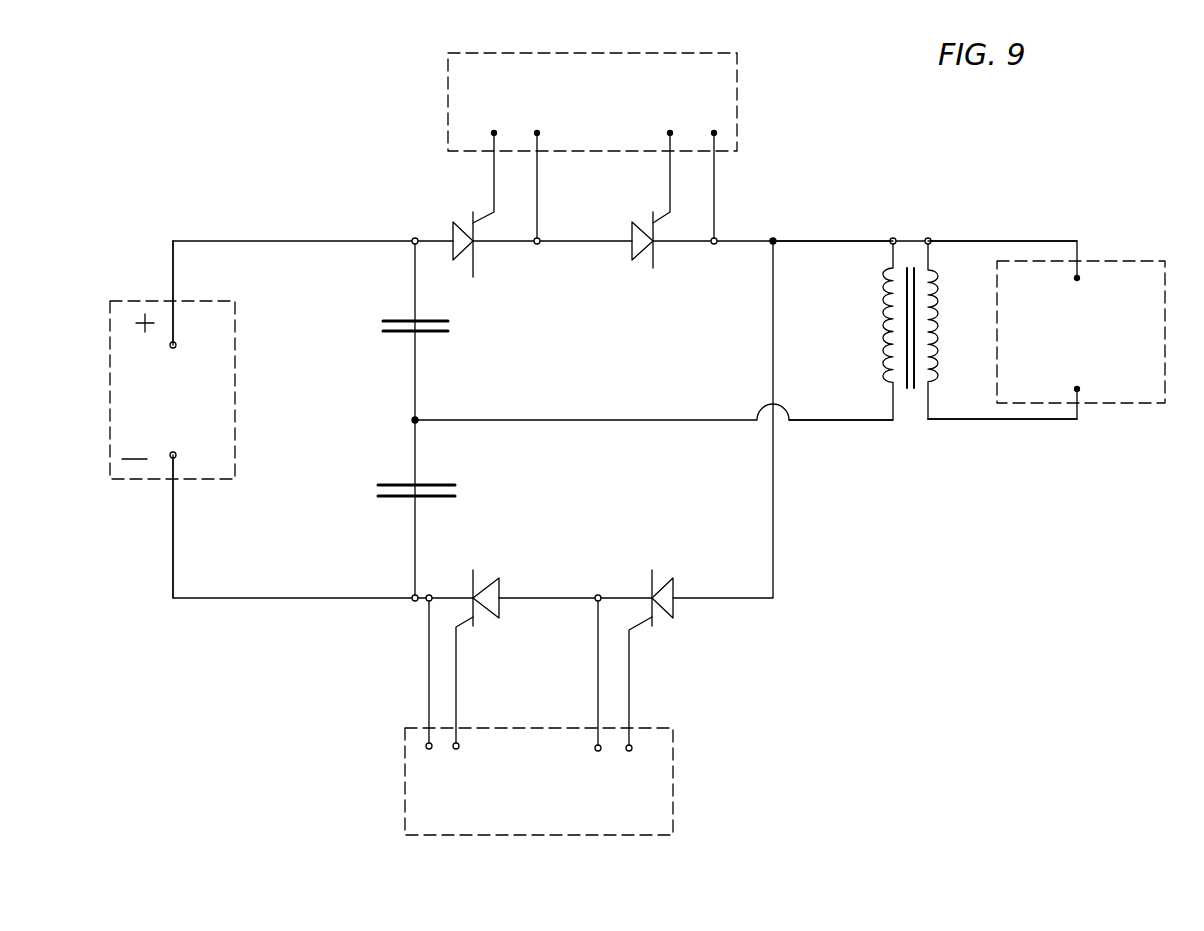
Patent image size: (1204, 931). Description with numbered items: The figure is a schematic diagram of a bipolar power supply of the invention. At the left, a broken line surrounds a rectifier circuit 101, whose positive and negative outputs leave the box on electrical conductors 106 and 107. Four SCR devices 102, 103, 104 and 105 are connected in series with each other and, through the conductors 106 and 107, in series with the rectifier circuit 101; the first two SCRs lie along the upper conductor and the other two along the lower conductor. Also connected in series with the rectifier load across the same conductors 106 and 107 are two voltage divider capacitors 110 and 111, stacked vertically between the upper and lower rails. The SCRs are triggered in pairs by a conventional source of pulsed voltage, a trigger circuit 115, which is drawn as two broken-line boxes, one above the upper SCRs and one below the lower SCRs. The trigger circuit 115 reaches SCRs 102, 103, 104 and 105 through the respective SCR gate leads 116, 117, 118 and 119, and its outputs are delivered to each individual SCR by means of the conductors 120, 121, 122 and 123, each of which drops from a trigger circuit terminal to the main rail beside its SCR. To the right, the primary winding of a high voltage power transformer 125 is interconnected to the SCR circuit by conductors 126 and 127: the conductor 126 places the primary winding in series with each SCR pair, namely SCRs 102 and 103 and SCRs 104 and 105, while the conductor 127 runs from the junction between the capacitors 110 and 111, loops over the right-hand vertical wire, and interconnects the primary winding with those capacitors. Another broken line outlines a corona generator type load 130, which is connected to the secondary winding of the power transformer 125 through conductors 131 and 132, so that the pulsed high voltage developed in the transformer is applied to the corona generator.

The rectifier circuit 101 is at (125, 410).
The SCR device 102 is at (452, 233).
The SCR device 103 is at (640, 247).
The SCR device 104 is at (673, 600).
The SCR device 105 is at (490, 580).
The electrical conductor 106 is at (173, 263).
The electrical conductor 107 is at (173, 535).
The voltage divider capacitor 110 is at (433, 320).
The voltage divider capacitor 111 is at (428, 483).
The trigger circuit 115 is at (733, 85).
The SCR gate lead 116 is at (494, 163).
The SCR gate lead 117 is at (670, 178).
The SCR gate lead 118 is at (629, 668).
The SCR gate lead 119 is at (456, 693).
The conductor 120 is at (537, 217).
The conductor 121 is at (714, 213).
The conductor 122 is at (598, 660).
The conductor 123 is at (427, 650).
The high voltage power transformer 125 is at (903, 265).
The conductor 126 is at (803, 240).
The conductor 127 is at (812, 420).
The corona generator type load 130 is at (1107, 275).
The conductor 131 is at (1000, 240).
The conductor 132 is at (1017, 419).